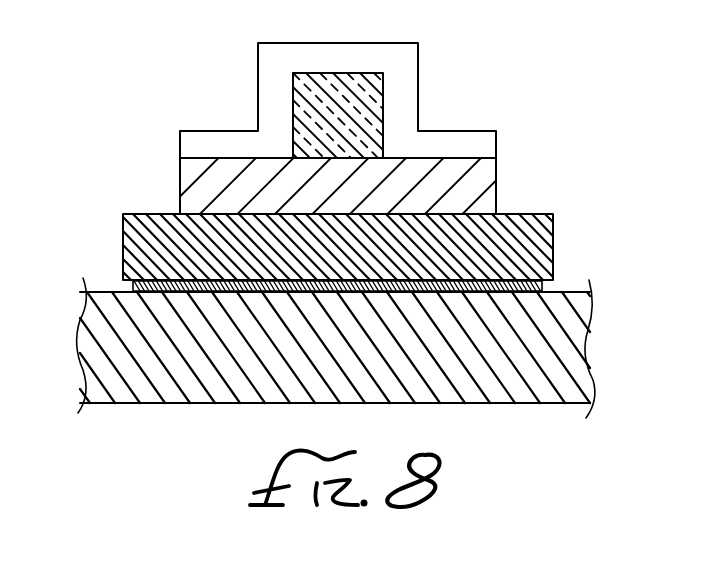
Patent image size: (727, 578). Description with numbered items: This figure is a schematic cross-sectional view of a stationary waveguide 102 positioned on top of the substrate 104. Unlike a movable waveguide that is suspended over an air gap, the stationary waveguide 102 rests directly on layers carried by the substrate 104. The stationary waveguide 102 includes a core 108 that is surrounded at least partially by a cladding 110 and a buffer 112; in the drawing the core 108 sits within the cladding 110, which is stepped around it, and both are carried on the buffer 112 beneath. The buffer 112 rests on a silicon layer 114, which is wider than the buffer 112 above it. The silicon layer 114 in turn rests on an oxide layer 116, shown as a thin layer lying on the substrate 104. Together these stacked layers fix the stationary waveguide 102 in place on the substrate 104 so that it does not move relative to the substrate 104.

The stationary waveguide 102 is at (328, 148).
The substrate 104 is at (96, 318).
The core 108 is at (382, 112).
The cladding 110 is at (357, 43).
The buffer 112 is at (496, 189).
The silicon layer 114 is at (132, 243).
The oxide layer 116 is at (544, 290).